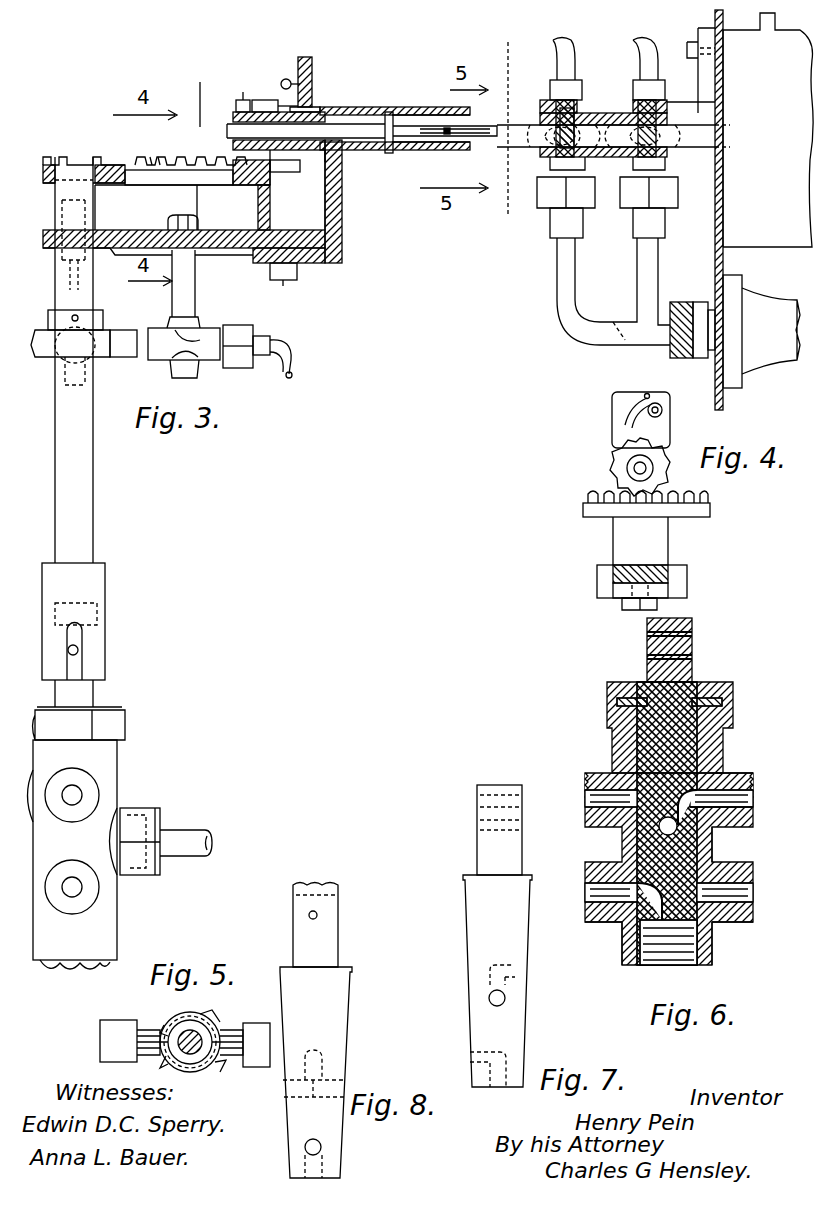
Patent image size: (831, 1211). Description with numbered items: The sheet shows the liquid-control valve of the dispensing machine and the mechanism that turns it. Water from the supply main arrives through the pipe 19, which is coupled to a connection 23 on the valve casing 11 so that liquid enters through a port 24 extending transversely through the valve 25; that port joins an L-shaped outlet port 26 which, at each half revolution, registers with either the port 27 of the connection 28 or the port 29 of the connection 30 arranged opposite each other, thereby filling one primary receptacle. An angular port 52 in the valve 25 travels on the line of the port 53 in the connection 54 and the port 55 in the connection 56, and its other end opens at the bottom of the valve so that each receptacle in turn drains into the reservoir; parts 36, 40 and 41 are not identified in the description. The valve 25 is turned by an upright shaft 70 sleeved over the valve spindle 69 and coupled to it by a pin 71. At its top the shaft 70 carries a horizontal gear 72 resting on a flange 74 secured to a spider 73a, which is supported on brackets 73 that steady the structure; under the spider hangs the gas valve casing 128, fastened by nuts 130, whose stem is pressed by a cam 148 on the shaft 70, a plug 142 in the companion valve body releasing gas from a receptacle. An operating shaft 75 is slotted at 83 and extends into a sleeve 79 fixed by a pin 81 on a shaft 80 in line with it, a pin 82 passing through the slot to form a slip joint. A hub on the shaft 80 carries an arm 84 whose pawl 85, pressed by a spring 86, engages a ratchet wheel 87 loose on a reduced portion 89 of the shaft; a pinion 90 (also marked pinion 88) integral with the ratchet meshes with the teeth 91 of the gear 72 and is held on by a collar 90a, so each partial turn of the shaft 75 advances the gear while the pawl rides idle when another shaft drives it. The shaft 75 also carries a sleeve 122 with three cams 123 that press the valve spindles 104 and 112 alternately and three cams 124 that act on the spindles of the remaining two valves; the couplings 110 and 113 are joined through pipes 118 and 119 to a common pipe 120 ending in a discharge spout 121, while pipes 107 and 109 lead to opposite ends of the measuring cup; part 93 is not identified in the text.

In FIG. 3, the valve casing 11 is at (117, 905).
In FIG. 3, the pipe 19 is at (193, 850).
In FIG. 3, the connection 23 is at (120, 812).
In FIG. 6, the port 24 is at (637, 835).
In FIG. 7, the port 24 is at (489, 997).
In FIG. 8, the port 24 is at (314, 1088).
In FIG. 6, the valve 25 is at (705, 935).
In FIG. 7, the valve 25 is at (522, 1023).
In FIG. 8, the valve 25 is at (352, 970).
In FIG. 6, the L shape outlet port 26 is at (712, 836).
In FIG. 7, the L shape outlet port 26 is at (515, 976).
In FIG. 6, the port 27 is at (753, 808).
In FIG. 6, the connection 28 is at (753, 798).
In FIG. 6, the port 29 is at (585, 800).
In FIG. 6, the connection 30 is at (600, 776).
In FIG. 6, the thread 36 is at (753, 773).
In FIG. 6, the cap nut 40 is at (685, 675).
In FIG. 6, the stem 41 is at (692, 640).
In FIG. 7, the stem 41 is at (478, 828).
In FIG. 6, the angular port 52 is at (665, 935).
In FIG. 7, the angular port 52 is at (470, 1055).
In FIG. 8, the angular port 52 is at (321, 1147).
In FIG. 6, the port 53 is at (595, 922).
In FIG. 6, the connection 54 is at (595, 883).
In FIG. 6, the port 55 is at (750, 890).
In FIG. 6, the connection 56 is at (735, 922).
In FIG. 3, the spindle 69 is at (80, 683).
In FIG. 3, the upright shaft 70 is at (95, 488).
In FIG. 3, the pin 71 is at (78, 650).
In FIG. 3, the horizontal gear 72 is at (110, 185).
In FIG. 4, the horizontal gear 72 is at (710, 512).
In FIG. 3, the brackets 73 is at (342, 218).
In FIG. 3, the spider 73a is at (228, 255).
In FIG. 3, the flange 74 is at (258, 210).
In FIG. 3, the shaft 75 is at (520, 150).
In FIG. 5, the shaft 75 is at (202, 1043).
In FIG. 3, the sleeve 79 is at (405, 118).
In FIG. 3, the shaft 80 is at (378, 150).
In FIG. 3, the pin 81 is at (392, 150).
In FIG. 3, the pin 82 is at (447, 136).
In FIG. 3, the slot 83 is at (483, 128).
In FIG. 3, the arm 84 is at (312, 58).
In FIG. 4, the arm 84 is at (612, 410).
In FIG. 3, the pawl 85 is at (286, 79).
In FIG. 4, the pawl 85 is at (662, 413).
In FIG. 4, the spring 86 is at (647, 393).
In FIG. 3, the ratchet wheel 87 is at (295, 160).
In FIG. 4, the ratchet wheel 87 is at (627, 456).
In FIG. 3, the pinion 88 is at (268, 176).
In FIG. 4, the pinion 88 is at (660, 452).
In FIG. 3, the reduced portion 89 is at (232, 130).
In FIG. 4, the reduced portion 89 is at (634, 468).
In FIG. 3, the pinion 90 is at (262, 98).
In FIG. 4, the pinion 90 is at (643, 503).
In FIG. 3, the collar 90a is at (236, 104).
In FIG. 3, the teeth 91 is at (152, 156).
In FIG. 3, the wall 93 is at (713, 75).
In FIG. 5, the spindle 104 is at (238, 1030).
In FIG. 3, the pipe 107 is at (566, 55).
In FIG. 3, the pipe 109 is at (640, 50).
In FIG. 3, the coupling 110 is at (545, 193).
In FIG. 5, the spindle 112 is at (145, 1030).
In FIG. 3, the coupling 113 is at (633, 195).
In FIG. 3, the pipe 118 is at (578, 256).
In FIG. 3, the pipe 119 is at (640, 296).
In FIG. 3, the common pipe 120 is at (615, 340).
In FIG. 3, the discharge spout 121 is at (773, 305).
In FIG. 3, the sleeve 122 is at (555, 110).
In FIG. 5, the sleeve 122 is at (190, 1020).
In FIG. 3, the cams 123 is at (575, 100).
In FIG. 5, the cams 123 is at (170, 1052).
In FIG. 3, the cams 124 is at (640, 110).
In FIG. 5, the cams 124 is at (210, 1015).
In FIG. 3, the valve casing 128 is at (165, 360).
In FIG. 3, the nuts 130 is at (183, 218).
In FIG. 3, the plug 142 is at (205, 372).
In FIG. 3, the cam 148 is at (125, 338).